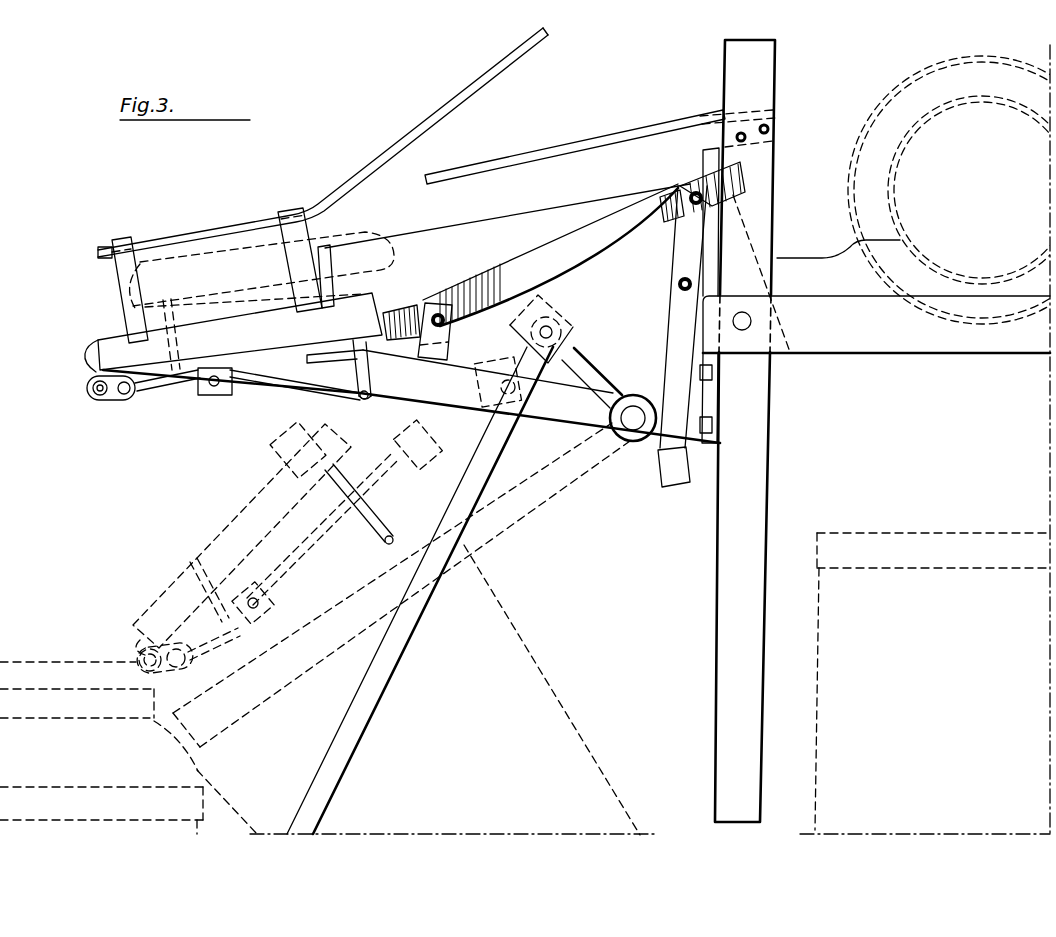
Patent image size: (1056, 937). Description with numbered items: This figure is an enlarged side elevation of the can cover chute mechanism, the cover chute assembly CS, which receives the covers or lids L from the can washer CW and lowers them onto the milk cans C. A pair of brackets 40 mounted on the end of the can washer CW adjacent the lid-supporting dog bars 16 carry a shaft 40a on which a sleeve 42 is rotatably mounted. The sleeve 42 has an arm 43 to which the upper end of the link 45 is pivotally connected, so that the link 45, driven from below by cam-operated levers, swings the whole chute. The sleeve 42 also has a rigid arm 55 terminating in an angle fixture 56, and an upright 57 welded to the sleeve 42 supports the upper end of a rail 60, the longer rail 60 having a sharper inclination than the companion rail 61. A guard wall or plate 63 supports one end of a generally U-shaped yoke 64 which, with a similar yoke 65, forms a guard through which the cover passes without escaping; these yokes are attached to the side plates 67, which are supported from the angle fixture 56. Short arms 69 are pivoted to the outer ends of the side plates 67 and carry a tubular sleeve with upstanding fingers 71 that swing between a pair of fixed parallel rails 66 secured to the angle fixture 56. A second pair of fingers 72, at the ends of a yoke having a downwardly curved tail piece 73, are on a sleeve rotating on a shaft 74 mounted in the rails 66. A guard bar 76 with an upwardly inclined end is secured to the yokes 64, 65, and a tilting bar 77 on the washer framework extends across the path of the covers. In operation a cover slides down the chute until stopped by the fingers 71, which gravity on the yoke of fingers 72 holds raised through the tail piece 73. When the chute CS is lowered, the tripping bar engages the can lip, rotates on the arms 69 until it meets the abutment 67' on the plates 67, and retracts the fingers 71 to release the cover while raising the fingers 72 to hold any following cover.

The can lid-supporting reciprocable dog bars 16 is at (1025, 357).
The brackets 40 is at (700, 445).
The shaft 40a is at (633, 442).
The sleeve 42 is at (633, 395).
The arm 43 is at (568, 364).
The link 45 is at (345, 752).
The rigid arm 55 is at (550, 488).
The angle fixture 56 is at (350, 442).
The upright 57 is at (668, 488).
The rail 60 is at (575, 250).
The rail 61 is at (656, 284).
The guard wall or plate 63 is at (500, 223).
The U-shaped yoke 64 is at (291, 212).
The yoke 65 is at (126, 238).
The rails 66 is at (233, 305).
The side plates 67 is at (240, 470).
The abutment 67' is at (94, 497).
The short arms 69 is at (108, 400).
The upstanding fingers 71 is at (173, 327).
The fingers 72 is at (385, 310).
The tail piece 73 is at (281, 380).
The shaft 74 is at (214, 398).
The guard bar 76 is at (404, 140).
The tilting bar 77 is at (590, 141).
The covers or lids L is at (905, 100).
The cover chute assembly CS is at (475, 126).
The can washer CW is at (936, 438).
The milk cans C is at (213, 765).